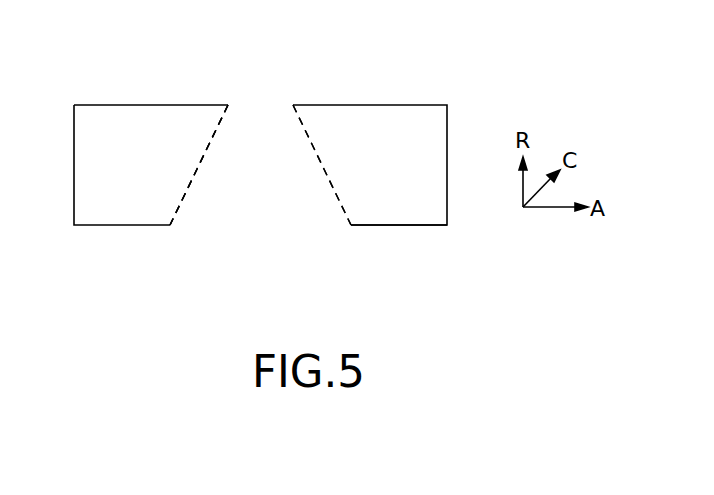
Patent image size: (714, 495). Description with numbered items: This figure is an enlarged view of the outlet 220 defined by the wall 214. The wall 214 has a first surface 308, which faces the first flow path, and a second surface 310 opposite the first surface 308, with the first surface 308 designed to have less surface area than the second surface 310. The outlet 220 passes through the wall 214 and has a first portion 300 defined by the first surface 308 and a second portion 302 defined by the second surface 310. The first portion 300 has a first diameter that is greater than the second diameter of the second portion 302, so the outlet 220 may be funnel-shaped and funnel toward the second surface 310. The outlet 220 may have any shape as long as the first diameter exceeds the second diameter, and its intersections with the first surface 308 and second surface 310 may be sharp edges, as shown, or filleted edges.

The wall 214 is at (93, 210).
The outlet 220 is at (233, 158).
The first portion 300 is at (267, 220).
The second portion 302 is at (260, 107).
The first surface 308 is at (395, 225).
The second surface 310 is at (350, 105).